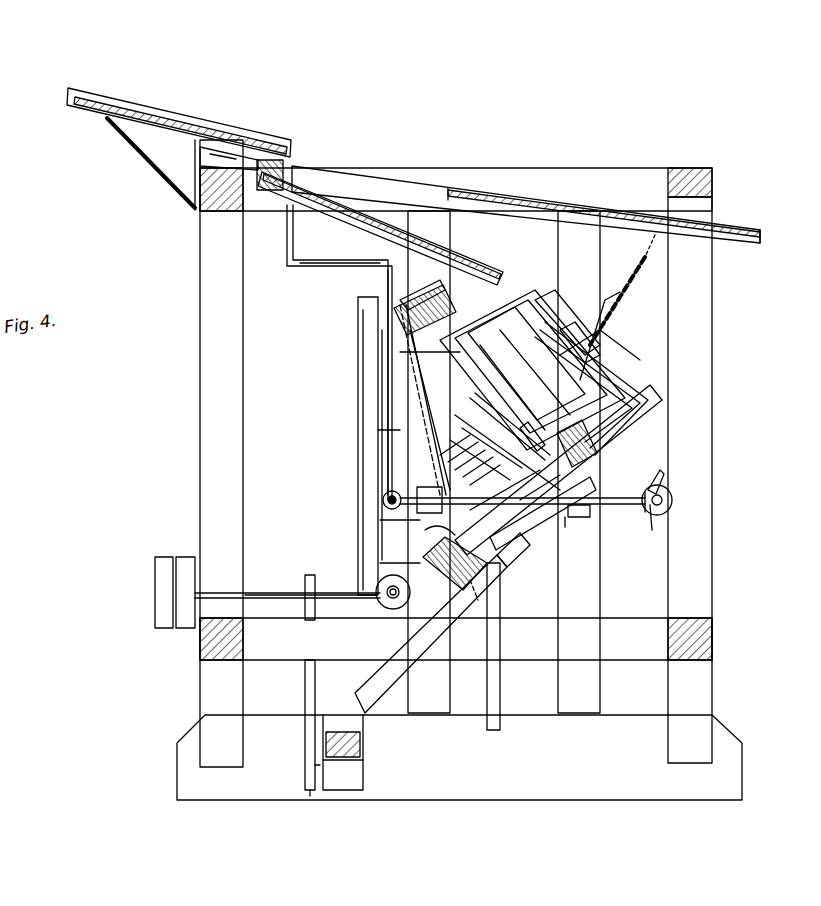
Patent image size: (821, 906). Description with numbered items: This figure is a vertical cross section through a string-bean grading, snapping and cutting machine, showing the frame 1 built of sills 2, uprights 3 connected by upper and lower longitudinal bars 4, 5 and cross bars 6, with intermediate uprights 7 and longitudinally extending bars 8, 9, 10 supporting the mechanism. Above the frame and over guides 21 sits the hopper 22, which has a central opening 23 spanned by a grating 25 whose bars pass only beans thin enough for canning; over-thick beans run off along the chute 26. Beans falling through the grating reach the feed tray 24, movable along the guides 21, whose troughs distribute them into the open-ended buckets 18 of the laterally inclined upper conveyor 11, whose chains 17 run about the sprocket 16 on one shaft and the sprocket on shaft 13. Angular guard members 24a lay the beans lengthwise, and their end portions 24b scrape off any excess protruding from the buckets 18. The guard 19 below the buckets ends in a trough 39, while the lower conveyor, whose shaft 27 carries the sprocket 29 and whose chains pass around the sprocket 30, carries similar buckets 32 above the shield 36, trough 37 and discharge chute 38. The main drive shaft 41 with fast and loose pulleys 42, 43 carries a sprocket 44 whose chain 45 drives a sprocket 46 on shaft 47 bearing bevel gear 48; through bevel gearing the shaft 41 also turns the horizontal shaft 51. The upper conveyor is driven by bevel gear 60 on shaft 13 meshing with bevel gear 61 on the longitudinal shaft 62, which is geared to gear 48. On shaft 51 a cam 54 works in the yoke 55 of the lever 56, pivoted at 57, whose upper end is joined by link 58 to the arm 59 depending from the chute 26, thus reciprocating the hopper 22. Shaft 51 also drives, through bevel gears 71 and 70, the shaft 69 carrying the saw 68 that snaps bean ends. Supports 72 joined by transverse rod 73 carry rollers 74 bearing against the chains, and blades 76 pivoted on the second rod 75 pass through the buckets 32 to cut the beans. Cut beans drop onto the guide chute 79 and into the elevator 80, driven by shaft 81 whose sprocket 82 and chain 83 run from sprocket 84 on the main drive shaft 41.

The frame 1 is at (606, 178).
The sills 2 is at (571, 792).
The uprights 3 is at (713, 560).
The upper longitudinal bar 4 is at (713, 178).
The lower longitudinal bar 5 is at (714, 641).
The cross bars 6 is at (522, 170).
The uprights 7 is at (582, 517).
The longitudinally extending bar 8 is at (385, 290).
The longitudinally extending bar 9 is at (598, 450).
The longitudinally extending bar 10 is at (443, 640).
The upper conveyor 11 is at (560, 350).
The shaft 13 is at (460, 316).
The sprocket 16 is at (532, 358).
The chains 17 is at (620, 410).
The buckets 18 is at (555, 305).
The guard 19 is at (622, 290).
The guides 21 is at (220, 158).
The hopper 22 is at (283, 158).
The opening 23 is at (462, 190).
The feed tray 24 is at (476, 265).
The angular guard members 24a is at (648, 402).
The end portions 24b is at (596, 300).
The grating 25 is at (378, 178).
The chute 26 is at (761, 236).
The shaft 27 is at (552, 520).
The sprocket 29 is at (538, 440).
The sprocket 30 is at (505, 505).
The buckets 32 is at (585, 470).
The shield 36 is at (388, 400).
The trough 37 is at (380, 520).
The discharge chute 38 is at (502, 636).
The trough 39 is at (600, 370).
The main drive shaft 41 is at (270, 592).
The fast pulley 42 is at (186, 557).
The loose pulley 43 is at (162, 560).
The sprocket 44 is at (475, 600).
The chain 45 is at (515, 560).
The sprocket 46 is at (425, 409).
The shaft 47 is at (608, 506).
The bevel gear 48 is at (648, 522).
The shaft 51 is at (394, 616).
The cam 54 is at (348, 605).
The yoke 55 is at (380, 563).
The lever 56 is at (358, 460).
The pivot 57 is at (383, 499).
The link 58 is at (312, 267).
The arm 59 is at (287, 238).
The bevel gear 60 is at (664, 478).
The bevel gear 61 is at (673, 498).
The shaft 62 is at (667, 506).
The saw 68 is at (555, 530).
The shaft 69 is at (431, 536).
The bevel gear 70 is at (409, 560).
The bevel gear 71 is at (385, 608).
The supports 72 is at (400, 353).
The transverse rod 73 is at (500, 415).
The rollers 74 is at (580, 518).
The second rod 75 is at (490, 440).
The blades 76 is at (380, 440).
The guide chute 79 is at (431, 650).
The elevator 80 is at (352, 778).
The shaft 81 is at (316, 790).
The sprocket 82 is at (305, 765).
The chain 83 is at (305, 683).
The sprocket 84 is at (310, 575).